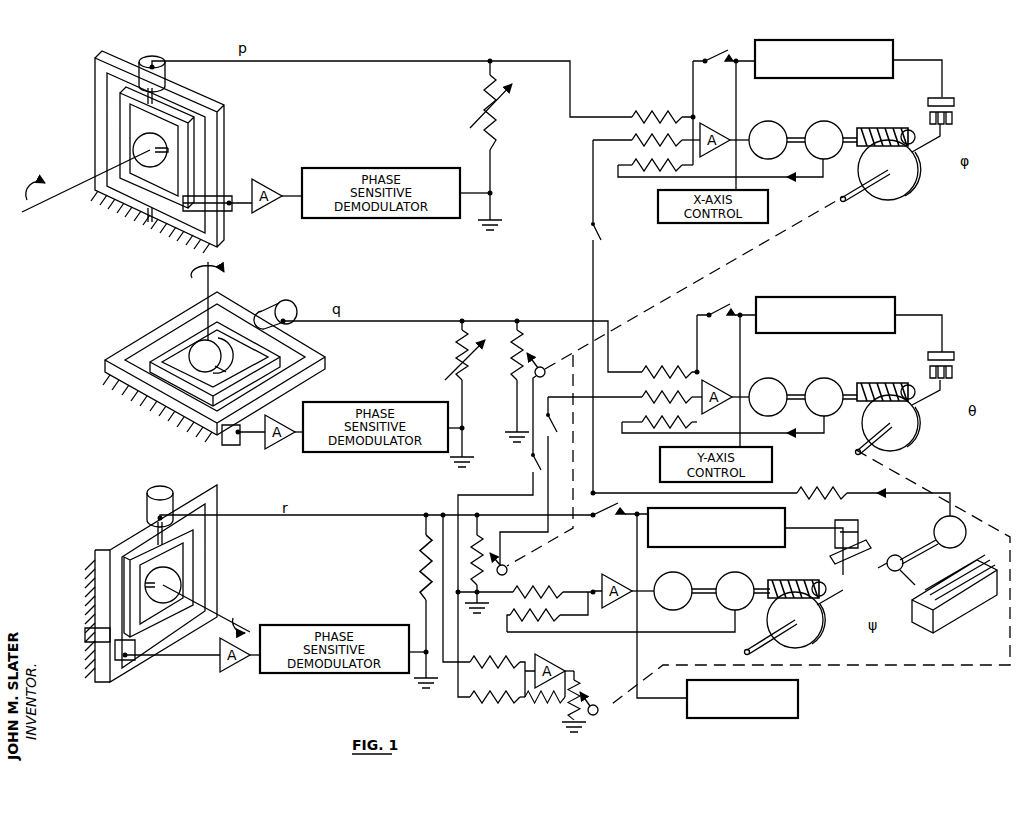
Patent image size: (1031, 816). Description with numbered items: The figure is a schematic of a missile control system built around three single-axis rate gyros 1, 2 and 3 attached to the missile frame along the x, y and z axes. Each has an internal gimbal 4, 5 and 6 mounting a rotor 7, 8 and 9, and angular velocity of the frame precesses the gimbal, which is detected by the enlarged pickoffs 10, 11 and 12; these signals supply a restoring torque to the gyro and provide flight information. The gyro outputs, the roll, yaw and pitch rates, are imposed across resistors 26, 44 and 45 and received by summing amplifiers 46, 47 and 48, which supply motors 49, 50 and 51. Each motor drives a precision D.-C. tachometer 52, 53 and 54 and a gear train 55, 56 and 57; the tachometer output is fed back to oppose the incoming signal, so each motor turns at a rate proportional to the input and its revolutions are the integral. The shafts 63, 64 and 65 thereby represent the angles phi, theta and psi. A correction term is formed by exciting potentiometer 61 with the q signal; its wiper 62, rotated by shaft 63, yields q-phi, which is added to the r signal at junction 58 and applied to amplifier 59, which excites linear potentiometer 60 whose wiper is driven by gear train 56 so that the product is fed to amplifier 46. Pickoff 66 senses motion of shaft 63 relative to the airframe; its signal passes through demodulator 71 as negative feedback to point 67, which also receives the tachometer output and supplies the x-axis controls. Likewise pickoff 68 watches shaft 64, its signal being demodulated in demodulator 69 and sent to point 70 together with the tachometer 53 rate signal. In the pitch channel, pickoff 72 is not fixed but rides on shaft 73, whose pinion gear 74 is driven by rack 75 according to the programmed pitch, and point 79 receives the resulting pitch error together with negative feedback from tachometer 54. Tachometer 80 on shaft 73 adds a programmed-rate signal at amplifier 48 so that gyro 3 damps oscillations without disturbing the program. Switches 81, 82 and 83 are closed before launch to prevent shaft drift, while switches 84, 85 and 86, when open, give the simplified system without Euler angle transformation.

The rate gyro 1 is at (159, 145).
The rate gyro 2 is at (199, 361).
The rate gyro 3 is at (153, 583).
The internal gimbal 4 is at (172, 106).
The internal gimbal 5 is at (228, 325).
The internal gimbal 6 is at (192, 542).
The rotor 7 is at (130, 118).
The rotor 8 is at (198, 350).
The rotor 9 is at (180, 576).
The pickoff 10 is at (230, 192).
The pickoff 11 is at (226, 445).
The pickoff 12 is at (85, 633).
The resistor 26 is at (496, 117).
The resistor 44 is at (458, 353).
The resistor 45 is at (422, 559).
The summing amplifier 46 is at (712, 130).
The summing amplifier 47 is at (714, 388).
The summing amplifier 48 is at (612, 578).
The motor 49 is at (775, 122).
The motor 50 is at (773, 379).
The motor 51 is at (682, 578).
The tachometer 52 is at (831, 122).
The tachometer 53 is at (831, 379).
The tachometer 54 is at (750, 578).
The gear train 55 is at (892, 124).
The gear train 56 is at (897, 374).
The gear train 57 is at (805, 580).
The junction 58 is at (527, 701).
The amplifier 59 is at (548, 664).
The linear potentiometer 60 is at (572, 712).
The potentiometer 61 is at (512, 371).
The wiper 62 is at (544, 365).
The shaft 63 is at (752, 262).
The shaft 64 is at (809, 567).
The shaft 65 is at (746, 650).
The pickoff 66 is at (958, 108).
The point 67 is at (765, 188).
The pickoff 68 is at (958, 362).
The demodulator 69 is at (880, 296).
The point 70 is at (768, 445).
The demodulator 71 is at (884, 38).
The pickoff 72 is at (858, 565).
The shaft 73 is at (918, 543).
The pinion gear 74 is at (894, 554).
The rack 75 is at (908, 588).
The point 79 is at (640, 708).
The tachometer 80 is at (966, 540).
The switch 81 is at (716, 57).
The switch 82 is at (730, 310).
The switch 83 is at (611, 497).
The switch 84 is at (588, 231).
The switch 85 is at (529, 466).
The switch 86 is at (535, 481).